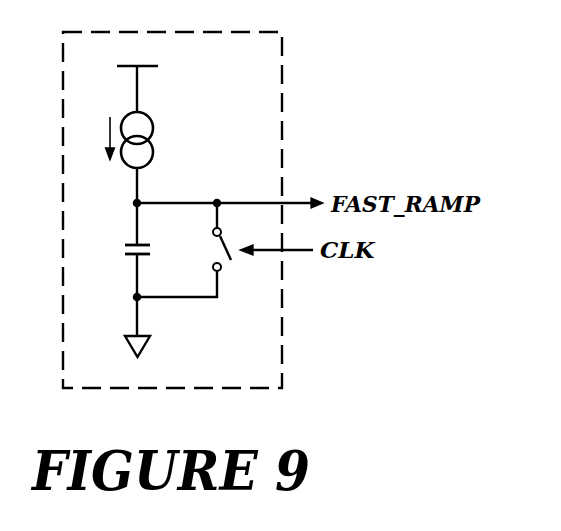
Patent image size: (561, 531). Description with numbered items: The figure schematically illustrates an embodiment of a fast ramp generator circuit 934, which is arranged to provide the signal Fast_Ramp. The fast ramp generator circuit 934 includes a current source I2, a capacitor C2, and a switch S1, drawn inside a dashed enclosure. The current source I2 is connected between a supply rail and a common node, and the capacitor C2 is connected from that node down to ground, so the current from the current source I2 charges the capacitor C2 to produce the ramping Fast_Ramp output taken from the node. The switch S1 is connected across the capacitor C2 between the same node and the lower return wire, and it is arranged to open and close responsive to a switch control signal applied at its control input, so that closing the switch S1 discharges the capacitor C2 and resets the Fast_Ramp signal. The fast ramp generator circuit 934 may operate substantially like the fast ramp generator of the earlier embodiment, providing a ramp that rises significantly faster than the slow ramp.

The fast ramp generator circuit 934 is at (282, 320).
The current source I2 is at (147, 140).
The capacitor C2 is at (119, 250).
The switch S1 is at (205, 237).